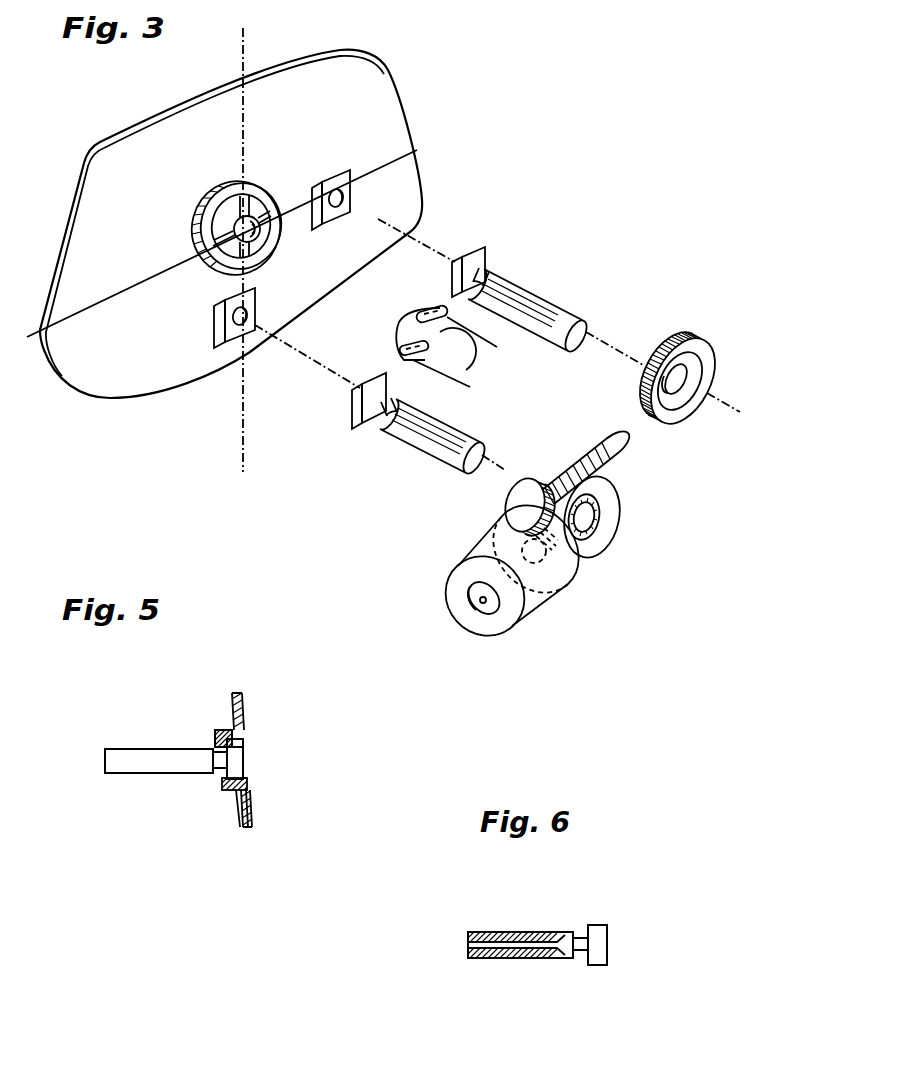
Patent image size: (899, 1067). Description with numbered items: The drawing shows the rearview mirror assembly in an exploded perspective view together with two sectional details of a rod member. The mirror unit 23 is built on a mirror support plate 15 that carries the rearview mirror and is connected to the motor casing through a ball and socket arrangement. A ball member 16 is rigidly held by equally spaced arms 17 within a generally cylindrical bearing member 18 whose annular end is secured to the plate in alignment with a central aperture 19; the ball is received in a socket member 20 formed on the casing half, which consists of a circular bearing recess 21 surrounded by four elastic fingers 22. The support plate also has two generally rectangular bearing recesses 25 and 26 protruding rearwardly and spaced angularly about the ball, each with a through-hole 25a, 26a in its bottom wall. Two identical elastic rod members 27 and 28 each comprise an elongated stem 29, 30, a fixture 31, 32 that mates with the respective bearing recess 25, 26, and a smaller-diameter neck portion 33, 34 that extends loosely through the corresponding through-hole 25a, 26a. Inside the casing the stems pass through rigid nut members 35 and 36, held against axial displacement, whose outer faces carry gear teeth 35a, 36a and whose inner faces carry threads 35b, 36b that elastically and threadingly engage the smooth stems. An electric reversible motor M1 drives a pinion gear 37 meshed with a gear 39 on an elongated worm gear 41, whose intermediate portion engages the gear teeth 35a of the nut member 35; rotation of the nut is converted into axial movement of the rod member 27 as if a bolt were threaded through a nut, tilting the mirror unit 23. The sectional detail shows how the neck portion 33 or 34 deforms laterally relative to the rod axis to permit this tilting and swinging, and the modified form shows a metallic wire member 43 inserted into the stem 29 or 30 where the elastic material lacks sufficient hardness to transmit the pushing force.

In FIG. 3, the mirror unit 23 is at (389, 62).
In FIG. 3, the ball member 16 is at (240, 228).
In FIG. 3, the arms 17 is at (226, 196).
In FIG. 3, the bearing member 18 is at (249, 215).
In FIG. 3, the central aperture 19 is at (255, 250).
In FIG. 3, the bearing recess 26 is at (336, 182).
In FIG. 5, the bearing recess 26 is at (269, 828).
In FIG. 3, the through-hole 26a is at (344, 198).
In FIG. 3, the bearing recess 25 is at (222, 334).
In FIG. 5, the bearing recess 25 is at (229, 792).
In FIG. 3, the through-hole 25a is at (247, 316).
In FIG. 5, the through-hole 25a is at (241, 766).
In FIG. 3, the socket member 20 is at (405, 305).
In FIG. 3, the bearing recess 21 is at (445, 368).
In FIG. 3, the elastic fingers 22 is at (432, 309).
In FIG. 3, the fixture 32 is at (472, 255).
In FIG. 5, the fixture 32 is at (235, 759).
In FIG. 6, the fixture 32 is at (597, 945).
In FIG. 3, the neck portion 34 is at (483, 288).
In FIG. 5, the neck portion 34 is at (192, 826).
In FIG. 6, the neck portion 34 is at (580, 944).
In FIG. 3, the stem 30 is at (576, 312).
In FIG. 5, the stem 30 is at (159, 732).
In FIG. 6, the stem 30 is at (520, 945).
In FIG. 3, the rod member 28 is at (547, 286).
In FIG. 5, the rod member 28 is at (138, 814).
In FIG. 6, the rod member 28 is at (520, 945).
In FIG. 3, the fixture 31 is at (357, 398).
In FIG. 5, the fixture 31 is at (238, 752).
In FIG. 6, the fixture 31 is at (599, 942).
In FIG. 3, the neck portion 33 is at (393, 400).
In FIG. 5, the neck portion 33 is at (214, 770).
In FIG. 6, the neck portion 33 is at (582, 951).
In FIG. 3, the stem 29 is at (421, 448).
In FIG. 5, the stem 29 is at (143, 749).
In FIG. 6, the stem 29 is at (512, 932).
In FIG. 3, the rod member 27 is at (371, 426).
In FIG. 5, the rod member 27 is at (128, 784).
In FIG. 6, the rod member 27 is at (464, 960).
In FIG. 3, the nut member 36 is at (659, 417).
In FIG. 3, the gear teeth 36a is at (688, 333).
In FIG. 3, the threads 36b is at (676, 388).
In FIG. 3, the gear 39 is at (529, 478).
In FIG. 3, the worm gear 41 is at (586, 455).
In FIG. 3, the nut member 35 is at (608, 493).
In FIG. 3, the gear teeth 35a is at (600, 538).
In FIG. 3, the threads 35b is at (600, 516).
In FIG. 3, the pinion gear 37 is at (565, 582).
In FIG. 3, the electric reversible motor M1 is at (512, 626).
In FIG. 5, the mirror support plate 15 is at (253, 810).
In FIG. 6, the metallic wire member 43 is at (490, 949).